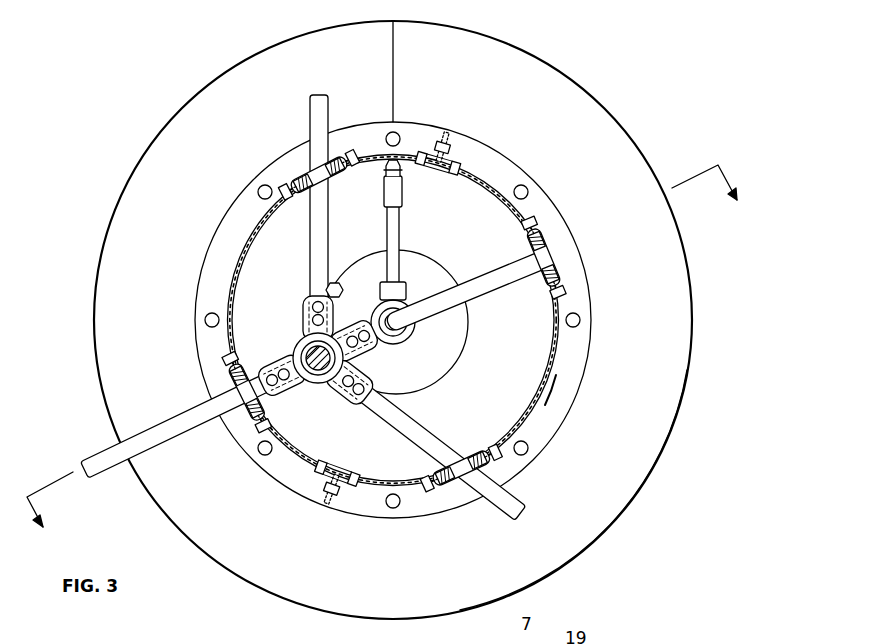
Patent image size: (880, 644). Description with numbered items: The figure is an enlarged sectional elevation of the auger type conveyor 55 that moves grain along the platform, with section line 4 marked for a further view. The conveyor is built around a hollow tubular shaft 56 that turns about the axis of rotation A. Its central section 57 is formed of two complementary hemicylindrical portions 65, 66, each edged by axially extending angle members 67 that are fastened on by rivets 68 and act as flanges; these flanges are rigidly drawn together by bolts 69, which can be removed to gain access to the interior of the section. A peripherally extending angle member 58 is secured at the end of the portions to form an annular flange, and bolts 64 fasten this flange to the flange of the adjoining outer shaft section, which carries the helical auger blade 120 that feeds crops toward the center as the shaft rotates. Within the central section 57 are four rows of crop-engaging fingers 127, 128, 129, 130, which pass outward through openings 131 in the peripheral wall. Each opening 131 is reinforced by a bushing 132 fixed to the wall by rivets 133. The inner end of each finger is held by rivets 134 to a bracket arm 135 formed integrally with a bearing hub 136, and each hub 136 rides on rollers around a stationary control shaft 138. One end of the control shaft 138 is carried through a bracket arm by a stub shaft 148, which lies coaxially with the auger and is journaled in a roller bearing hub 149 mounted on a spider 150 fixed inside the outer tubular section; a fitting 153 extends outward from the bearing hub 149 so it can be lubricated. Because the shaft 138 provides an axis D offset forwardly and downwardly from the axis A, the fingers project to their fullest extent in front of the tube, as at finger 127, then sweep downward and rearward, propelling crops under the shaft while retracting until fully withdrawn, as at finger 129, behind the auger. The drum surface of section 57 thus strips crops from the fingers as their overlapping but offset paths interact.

The auger type conveyor 55 is at (190, 96).
The tubular shaft 56 is at (472, 165).
The central section 57 is at (555, 343).
The peripherally extending angle member 58 is at (215, 245).
The bolt 64 is at (22, 321).
The hemicylindrical portion 65 is at (297, 457).
The hemicylindrical portion 66 is at (378, 490).
The axially extending angle member 67 is at (448, 138).
The rivet 68 is at (452, 172).
The bolt 69 is at (438, 140).
The helical auger blade 120 is at (636, 472).
The finger 127 is at (168, 433).
The finger 128 is at (508, 505).
The finger 129 is at (490, 290).
The finger 130 is at (325, 236).
The opening 131 is at (302, 170).
The bushing 132 is at (284, 186).
The rivet 133 is at (346, 147).
The rivet 134 is at (351, 290).
The bracket arm 135 is at (304, 300).
The bearing hub 136 is at (303, 345).
The control shaft 138 is at (304, 357).
The stub shaft 148 is at (414, 326).
The bearing hub 149 is at (404, 345).
The spider 150 is at (534, 388).
The fitting 153 is at (398, 232).
The axis of rotation A is at (403, 308).
The offset axis D is at (334, 362).
The section line 4- 4 is at (386, 358).